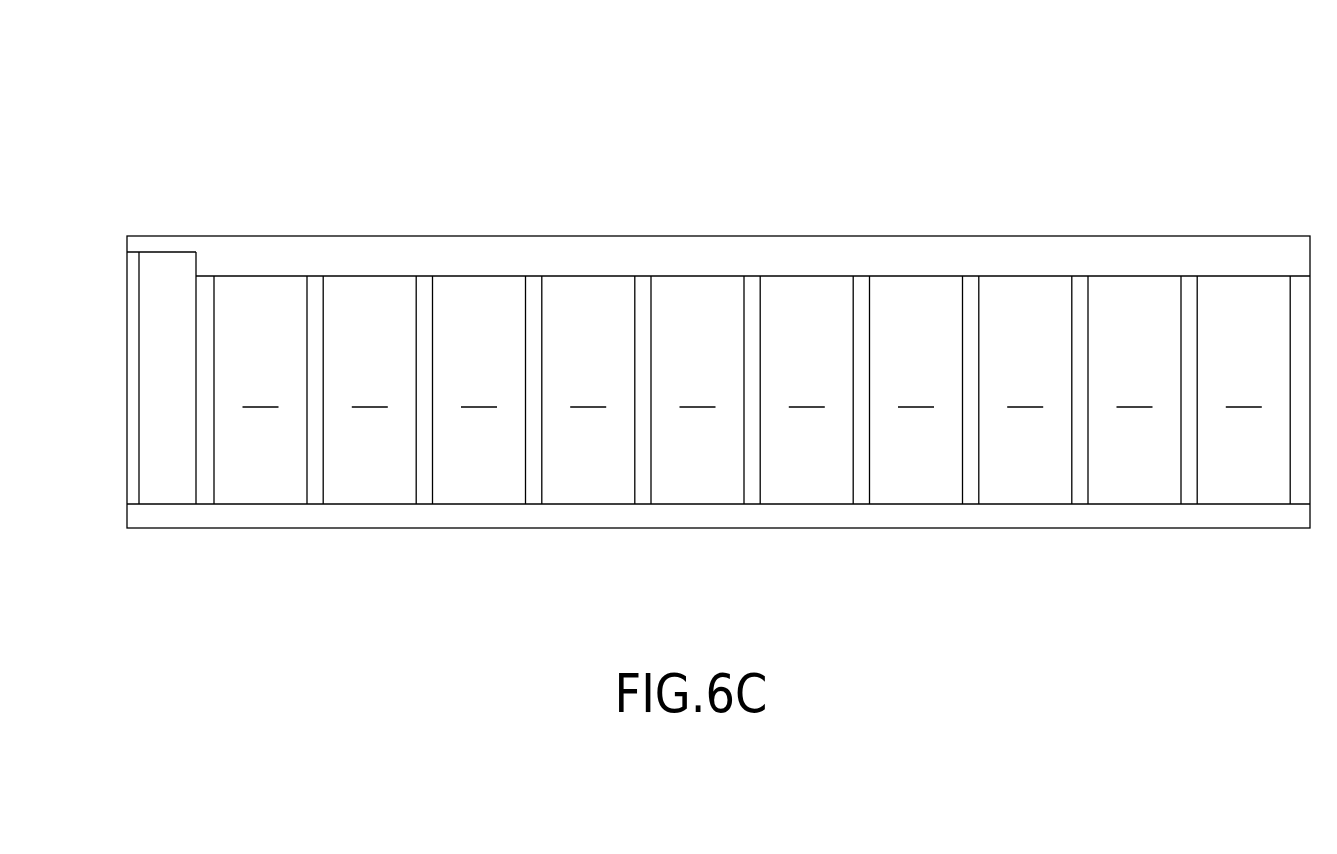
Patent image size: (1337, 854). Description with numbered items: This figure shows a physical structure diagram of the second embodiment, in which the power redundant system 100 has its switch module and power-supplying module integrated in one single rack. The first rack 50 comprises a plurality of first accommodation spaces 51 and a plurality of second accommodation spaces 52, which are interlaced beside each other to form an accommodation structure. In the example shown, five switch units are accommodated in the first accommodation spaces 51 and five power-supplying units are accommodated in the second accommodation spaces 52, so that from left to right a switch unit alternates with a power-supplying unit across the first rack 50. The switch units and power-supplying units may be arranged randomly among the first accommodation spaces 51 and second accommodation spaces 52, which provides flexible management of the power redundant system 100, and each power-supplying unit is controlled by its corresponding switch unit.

The power redundant system 100 is at (631, 56).
The first rack 50 is at (273, 165).
The first accommodation spaces 51 is at (256, 302).
The second accommodation spaces 52 is at (372, 302).